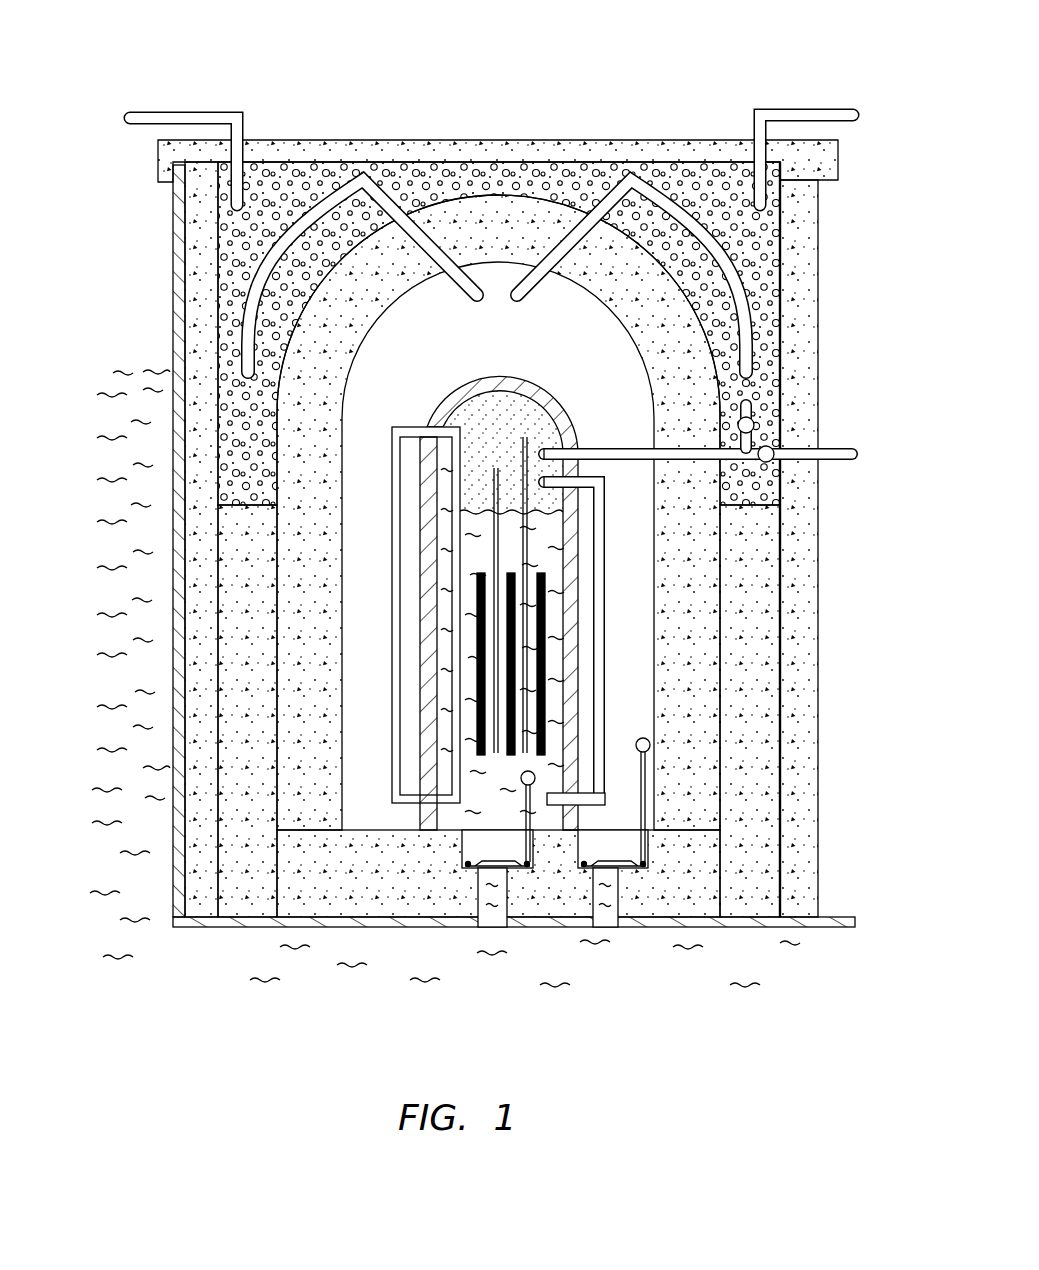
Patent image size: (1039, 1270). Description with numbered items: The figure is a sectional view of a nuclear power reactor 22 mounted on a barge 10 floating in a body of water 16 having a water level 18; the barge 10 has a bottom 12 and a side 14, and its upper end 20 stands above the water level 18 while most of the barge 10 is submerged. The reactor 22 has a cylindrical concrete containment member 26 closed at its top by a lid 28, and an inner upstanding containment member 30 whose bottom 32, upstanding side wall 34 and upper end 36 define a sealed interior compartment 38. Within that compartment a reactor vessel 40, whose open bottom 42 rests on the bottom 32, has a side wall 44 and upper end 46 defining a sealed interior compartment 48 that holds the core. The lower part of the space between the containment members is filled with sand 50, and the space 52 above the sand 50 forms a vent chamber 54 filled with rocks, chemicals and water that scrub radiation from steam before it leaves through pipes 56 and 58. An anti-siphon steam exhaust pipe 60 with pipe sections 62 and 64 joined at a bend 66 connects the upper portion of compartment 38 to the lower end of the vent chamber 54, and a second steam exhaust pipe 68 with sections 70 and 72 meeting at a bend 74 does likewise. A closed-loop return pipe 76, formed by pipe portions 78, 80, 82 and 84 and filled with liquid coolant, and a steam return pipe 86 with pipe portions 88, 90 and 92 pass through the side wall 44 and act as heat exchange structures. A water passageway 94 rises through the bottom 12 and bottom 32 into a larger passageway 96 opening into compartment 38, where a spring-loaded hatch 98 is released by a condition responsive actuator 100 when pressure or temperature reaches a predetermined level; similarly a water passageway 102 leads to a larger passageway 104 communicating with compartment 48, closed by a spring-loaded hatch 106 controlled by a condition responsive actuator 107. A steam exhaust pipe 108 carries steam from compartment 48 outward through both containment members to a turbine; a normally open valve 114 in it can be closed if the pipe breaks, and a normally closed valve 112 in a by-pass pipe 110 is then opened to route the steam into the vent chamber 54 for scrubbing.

The barge 10 is at (140, 324).
The bottom 12 is at (462, 927).
The side 14 is at (176, 615).
The body of water 16 is at (115, 785).
The water level 18 is at (113, 373).
The upper end 20 is at (172, 188).
The nuclear power reactor 22 is at (607, 124).
The containment member 26 is at (812, 644).
The cover or lid 28 is at (707, 150).
The upstanding containment member 30 is at (300, 712).
The bottom 32 is at (745, 880).
The upstanding side wall 34 is at (700, 653).
The upper end 36 is at (492, 376).
The sealed interior compartment 38 is at (544, 338).
The reactor vessel 40 is at (582, 404).
The open bottom 42 is at (606, 800).
The side wall 44 is at (420, 592).
The upper end 46 is at (510, 420).
The sealed interior compartment 48 is at (620, 322).
The sand 50 is at (762, 832).
The space 52 is at (293, 172).
The vent chamber 54 is at (740, 236).
The pipe 56 is at (218, 110).
The pipe 58 is at (822, 113).
The steam exhaust pipe 60 is at (408, 183).
The pipe section 62 is at (505, 205).
The pipe section 64 is at (240, 350).
The bend 66 is at (365, 172).
The second steam exhaust pipe 68 is at (748, 212).
The pipe section 70 is at (737, 287).
The pipe section 72 is at (521, 236).
The bend 74 is at (633, 173).
The return pipe 76 is at (399, 409).
The pipe portion 78 is at (392, 425).
The pipe portion 80 is at (392, 522).
The pipe portion 82 is at (521, 781).
The pipe portion 84 is at (452, 668).
The steam return pipe 86 is at (615, 562).
The pipe portion 88 is at (620, 446).
The pipe portion 90 is at (600, 678).
The pipe portion 92 is at (578, 820).
The water passageway 94 is at (620, 918).
The larger water passageway 96 is at (626, 860).
The spring-loaded hatch 98 is at (585, 845).
The condition responsive actuator 100 is at (650, 748).
The water passageway 102 is at (497, 918).
The larger passageway 104 is at (482, 860).
The spring-loaded hatch 106 is at (470, 863).
The condition responsive actuator 107 is at (398, 802).
The steam exhaust pipe 108 is at (733, 457).
The steam by-pass pipe 110 is at (755, 415).
The normally closed valve 112 is at (768, 425).
The normally open valve 114 is at (775, 463).